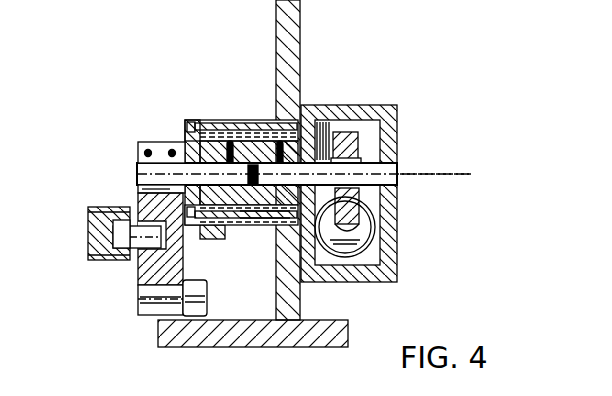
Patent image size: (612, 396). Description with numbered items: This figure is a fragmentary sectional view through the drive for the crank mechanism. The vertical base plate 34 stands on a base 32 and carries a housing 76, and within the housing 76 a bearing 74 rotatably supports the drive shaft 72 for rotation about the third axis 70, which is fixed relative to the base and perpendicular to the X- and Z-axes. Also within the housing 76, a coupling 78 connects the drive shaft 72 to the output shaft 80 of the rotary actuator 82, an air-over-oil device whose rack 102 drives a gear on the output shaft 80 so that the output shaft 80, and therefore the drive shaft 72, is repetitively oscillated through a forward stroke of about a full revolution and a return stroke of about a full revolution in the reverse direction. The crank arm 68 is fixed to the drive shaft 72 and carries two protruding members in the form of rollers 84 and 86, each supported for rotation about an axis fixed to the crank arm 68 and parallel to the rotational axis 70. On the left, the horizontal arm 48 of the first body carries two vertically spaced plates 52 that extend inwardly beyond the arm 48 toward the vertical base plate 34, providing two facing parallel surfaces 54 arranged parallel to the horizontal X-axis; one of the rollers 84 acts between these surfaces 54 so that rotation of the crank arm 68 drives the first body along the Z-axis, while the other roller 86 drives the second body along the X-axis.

The base plate 32 is at (303, 347).
The vertical base plate 34 is at (304, 2).
The horizontal arm 48 is at (93, 232).
The plates 52 is at (100, 206).
The parallel surfaces 54 is at (125, 197).
The crank arm 68 is at (148, 310).
The third axis 70 is at (473, 160).
The drive shaft 72 is at (139, 165).
The bearing 74 is at (208, 226).
The housing 76 is at (247, 120).
The coupling 78 is at (262, 226).
The output shaft 80 is at (397, 184).
The rotary actuator 82 is at (398, 268).
The roller 84 is at (120, 238).
The roller 86 is at (207, 302).
The rack 102 is at (375, 245).